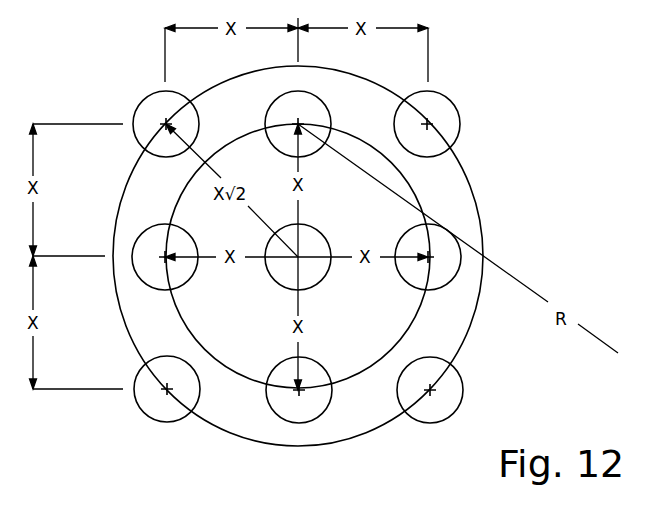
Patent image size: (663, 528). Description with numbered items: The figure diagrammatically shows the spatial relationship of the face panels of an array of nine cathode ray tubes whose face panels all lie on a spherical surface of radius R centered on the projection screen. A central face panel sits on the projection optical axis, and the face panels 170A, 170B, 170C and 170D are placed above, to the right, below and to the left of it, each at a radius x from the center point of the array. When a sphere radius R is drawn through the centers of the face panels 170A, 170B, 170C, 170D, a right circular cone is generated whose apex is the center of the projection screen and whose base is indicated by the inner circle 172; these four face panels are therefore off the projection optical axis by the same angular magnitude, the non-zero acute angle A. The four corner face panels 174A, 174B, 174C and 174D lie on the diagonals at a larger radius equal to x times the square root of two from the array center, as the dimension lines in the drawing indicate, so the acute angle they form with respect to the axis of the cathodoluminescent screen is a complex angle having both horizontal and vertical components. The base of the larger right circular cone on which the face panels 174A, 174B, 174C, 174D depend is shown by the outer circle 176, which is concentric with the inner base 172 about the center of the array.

The face panel 170A is at (268, 110).
The face panel 170B is at (403, 278).
The face panel 170C is at (283, 364).
The face panel 170D is at (198, 268).
The base of right circular cone 172 is at (393, 348).
The face panel 174A is at (458, 108).
The face panel 174B is at (463, 397).
The face panel 174C is at (137, 404).
The face panel 174D is at (140, 105).
The base of right circular cone 176 is at (473, 190).